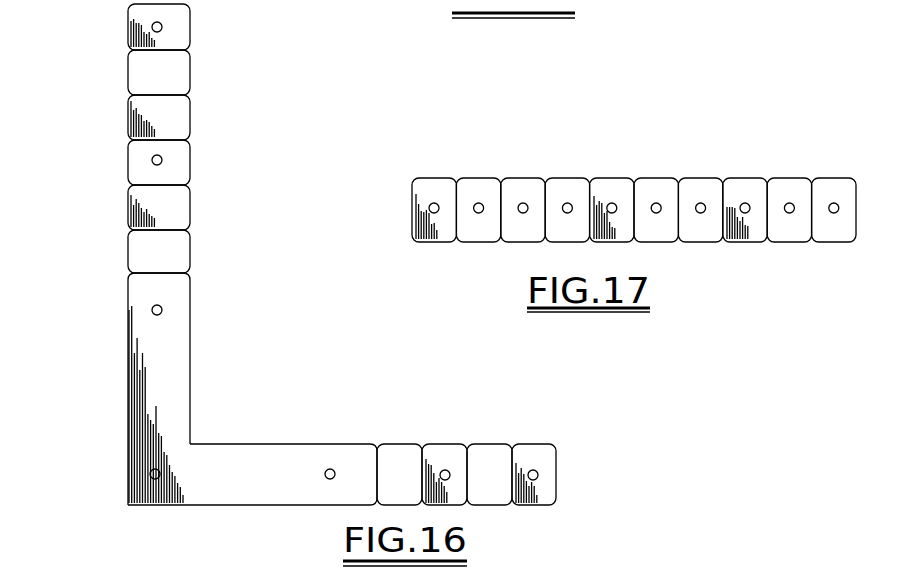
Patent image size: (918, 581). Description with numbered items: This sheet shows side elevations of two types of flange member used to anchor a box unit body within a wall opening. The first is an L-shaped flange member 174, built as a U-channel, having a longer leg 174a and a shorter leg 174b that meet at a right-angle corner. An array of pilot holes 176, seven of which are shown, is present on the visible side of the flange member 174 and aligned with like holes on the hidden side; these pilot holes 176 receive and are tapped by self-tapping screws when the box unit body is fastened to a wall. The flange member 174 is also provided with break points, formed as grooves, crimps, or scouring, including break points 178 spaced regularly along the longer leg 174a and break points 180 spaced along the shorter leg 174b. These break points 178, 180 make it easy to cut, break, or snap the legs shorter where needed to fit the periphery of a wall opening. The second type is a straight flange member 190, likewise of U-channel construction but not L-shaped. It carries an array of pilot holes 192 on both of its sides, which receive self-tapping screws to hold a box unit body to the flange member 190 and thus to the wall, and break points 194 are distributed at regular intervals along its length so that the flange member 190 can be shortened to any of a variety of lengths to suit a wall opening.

In FIG. 16, the L-shaped flange member 174 is at (212, 131).
In FIG. 16, the longer leg 174a is at (163, 353).
In FIG. 16, the shorter leg 174b is at (243, 493).
In FIG. 16, the pilot holes 176 is at (150, 474).
In FIG. 16, the break points 178 is at (152, 138).
In FIG. 16, the break points 180 is at (425, 470).
In FIG. 17, the flange member 190 is at (675, 148).
In FIG. 17, the pilot holes 192 is at (566, 200).
In FIG. 17, the break points 194 is at (723, 213).